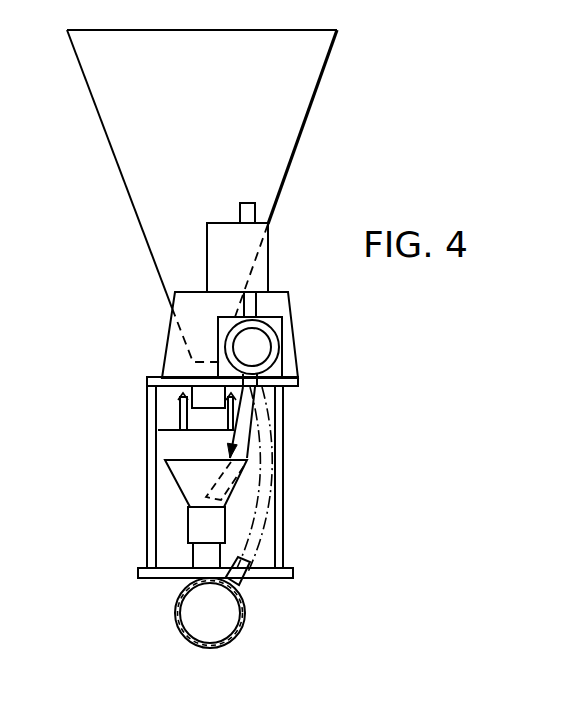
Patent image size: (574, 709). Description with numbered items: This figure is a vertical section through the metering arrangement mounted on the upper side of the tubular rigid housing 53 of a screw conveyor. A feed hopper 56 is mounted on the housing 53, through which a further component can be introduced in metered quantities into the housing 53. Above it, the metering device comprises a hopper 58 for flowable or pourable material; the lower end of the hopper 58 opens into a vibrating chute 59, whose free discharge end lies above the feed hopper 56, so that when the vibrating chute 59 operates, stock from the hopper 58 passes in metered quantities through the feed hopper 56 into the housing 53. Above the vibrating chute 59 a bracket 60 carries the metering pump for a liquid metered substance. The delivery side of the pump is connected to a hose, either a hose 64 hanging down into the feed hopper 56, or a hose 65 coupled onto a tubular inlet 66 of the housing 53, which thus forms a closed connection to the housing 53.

The tubular rigid housing 53 is at (245, 623).
The feed hopper 56 is at (178, 480).
The hopper 58 is at (310, 93).
The vibrating chute 59 is at (197, 406).
The bracket 60 is at (294, 384).
The hose 64 is at (250, 438).
The hose 65 is at (256, 529).
The tubular inlet 66 is at (240, 584).